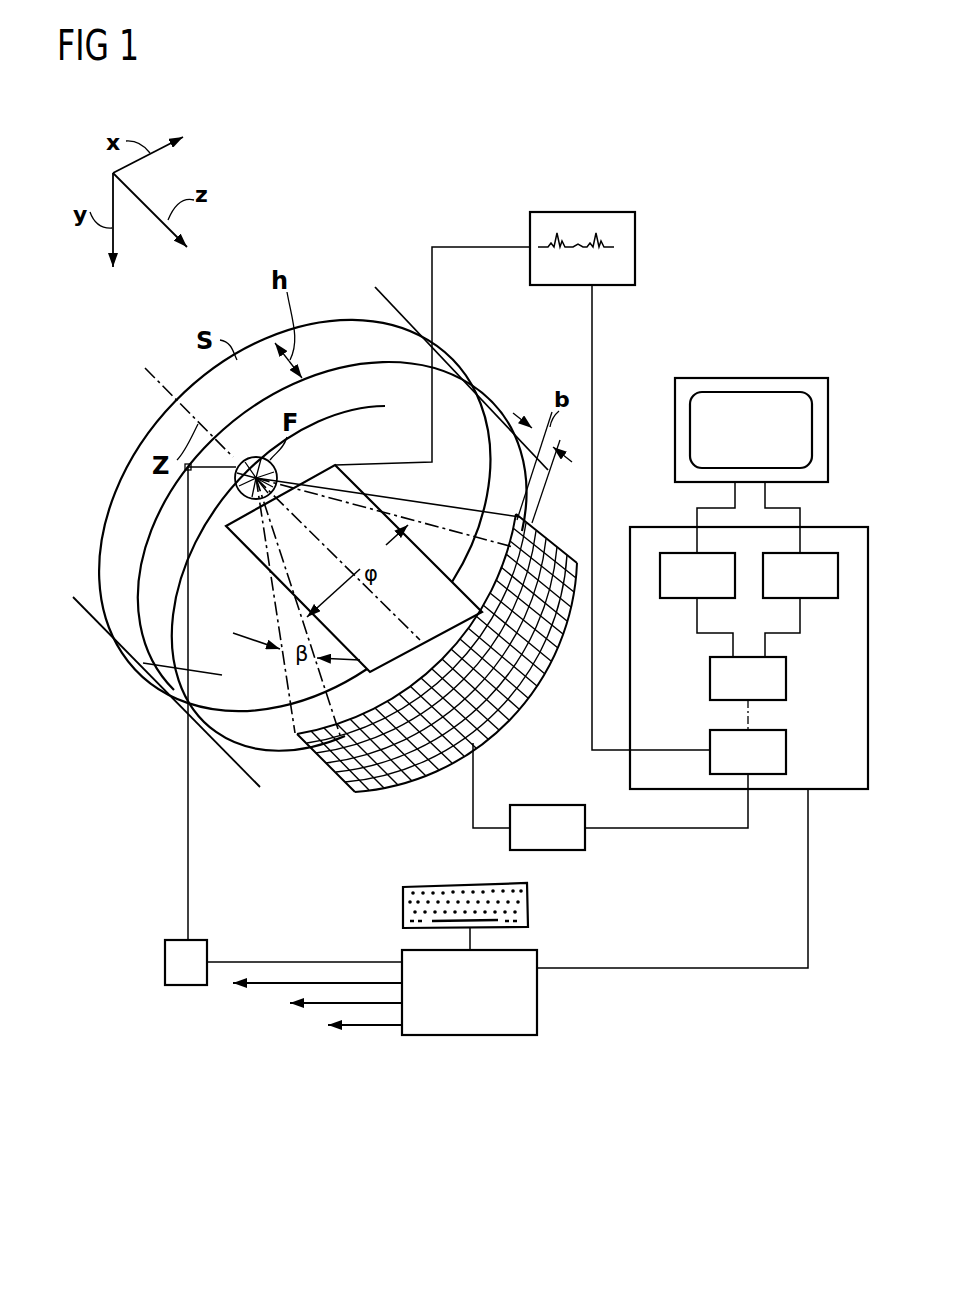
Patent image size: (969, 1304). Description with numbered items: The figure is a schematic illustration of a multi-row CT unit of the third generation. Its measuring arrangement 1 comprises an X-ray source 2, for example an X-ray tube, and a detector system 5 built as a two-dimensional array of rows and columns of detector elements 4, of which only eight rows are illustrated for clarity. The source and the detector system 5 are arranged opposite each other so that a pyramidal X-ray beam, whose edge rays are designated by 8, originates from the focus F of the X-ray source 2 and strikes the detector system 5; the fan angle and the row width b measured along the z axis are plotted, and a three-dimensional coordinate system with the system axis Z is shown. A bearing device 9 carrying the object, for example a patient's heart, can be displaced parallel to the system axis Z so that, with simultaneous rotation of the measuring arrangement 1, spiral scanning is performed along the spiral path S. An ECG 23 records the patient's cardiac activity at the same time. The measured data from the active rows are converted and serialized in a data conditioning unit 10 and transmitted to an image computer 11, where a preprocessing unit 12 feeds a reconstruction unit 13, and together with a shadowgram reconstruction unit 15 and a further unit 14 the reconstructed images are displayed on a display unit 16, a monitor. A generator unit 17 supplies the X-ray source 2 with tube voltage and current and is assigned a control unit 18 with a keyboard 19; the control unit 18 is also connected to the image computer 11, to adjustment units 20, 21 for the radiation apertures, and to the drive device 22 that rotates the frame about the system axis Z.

The measuring arrangement 1 is at (153, 773).
The X-ray source 2 is at (240, 488).
The detector elements 4 is at (493, 690).
The detector system 5 is at (437, 675).
The edge rays 8 is at (290, 683).
The bearing device 9 is at (253, 547).
The data conditioning unit 10 is at (533, 812).
The image computer 11 is at (745, 626).
The preprocessing unit 12 is at (777, 762).
The reconstruction unit 13 is at (675, 582).
The memory unit 14 is at (775, 673).
The shadowgram reconstruction unit 15 is at (817, 572).
The display unit 16 is at (682, 397).
The generator unit 17 is at (182, 978).
The control unit 18 is at (525, 1020).
The keyboard 19 is at (407, 910).
The adjustment unit 20 is at (270, 985).
The adjustment unit 21 is at (318, 1005).
The drive device 22 is at (370, 1027).
The ECG 23 is at (582, 212).